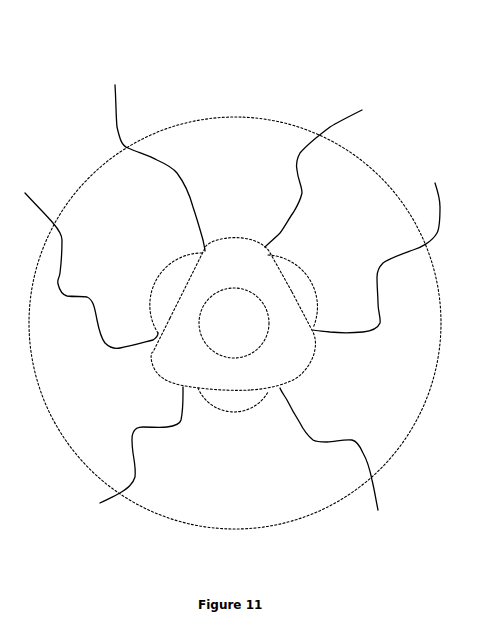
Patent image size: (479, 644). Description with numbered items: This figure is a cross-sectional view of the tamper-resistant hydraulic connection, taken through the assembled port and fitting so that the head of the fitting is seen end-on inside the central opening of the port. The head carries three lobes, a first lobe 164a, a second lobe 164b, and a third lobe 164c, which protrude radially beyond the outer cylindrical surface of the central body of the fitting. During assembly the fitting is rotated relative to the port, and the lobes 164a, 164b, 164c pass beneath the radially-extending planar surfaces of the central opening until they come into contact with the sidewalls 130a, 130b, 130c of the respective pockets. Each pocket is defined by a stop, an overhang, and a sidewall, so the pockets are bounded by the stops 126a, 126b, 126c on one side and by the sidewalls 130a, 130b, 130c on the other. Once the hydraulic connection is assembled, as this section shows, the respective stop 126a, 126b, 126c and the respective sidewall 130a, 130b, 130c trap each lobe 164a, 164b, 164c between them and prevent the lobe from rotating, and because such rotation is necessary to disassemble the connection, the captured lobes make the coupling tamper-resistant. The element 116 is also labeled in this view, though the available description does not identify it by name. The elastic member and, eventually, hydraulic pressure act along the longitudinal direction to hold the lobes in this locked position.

The lobed body 116 is at (298, 287).
The stop 126a is at (382, 250).
The stop 126b is at (156, 161).
The stop 126c is at (127, 456).
The sidewall 130a is at (338, 460).
The sidewall 130b is at (329, 174).
The sidewall 130c is at (85, 264).
The first lobe 164a is at (290, 355).
The second lobe 164b is at (236, 257).
The third lobe 164c is at (175, 355).